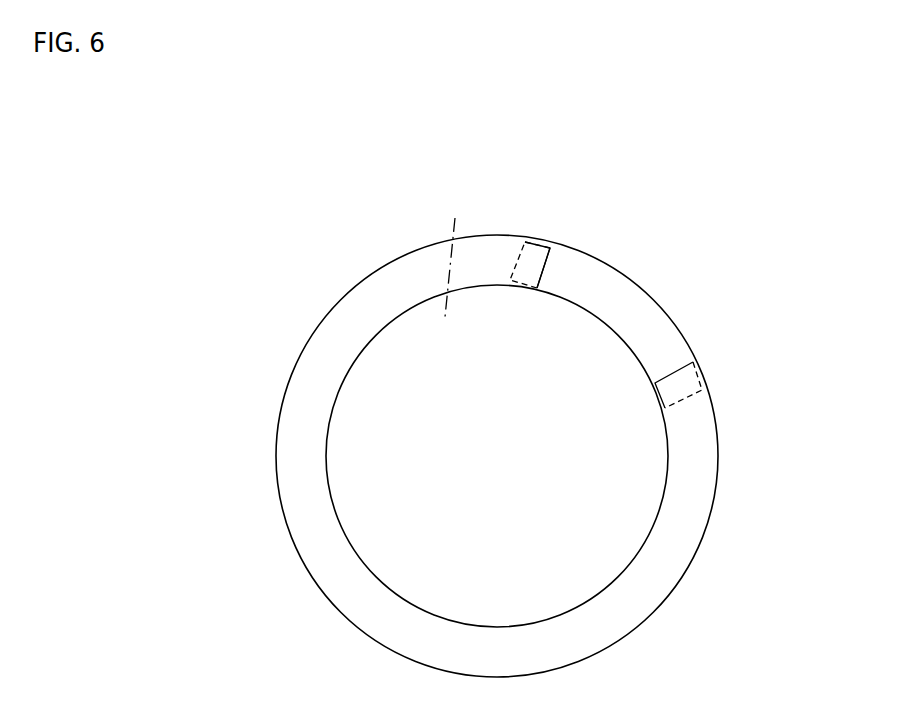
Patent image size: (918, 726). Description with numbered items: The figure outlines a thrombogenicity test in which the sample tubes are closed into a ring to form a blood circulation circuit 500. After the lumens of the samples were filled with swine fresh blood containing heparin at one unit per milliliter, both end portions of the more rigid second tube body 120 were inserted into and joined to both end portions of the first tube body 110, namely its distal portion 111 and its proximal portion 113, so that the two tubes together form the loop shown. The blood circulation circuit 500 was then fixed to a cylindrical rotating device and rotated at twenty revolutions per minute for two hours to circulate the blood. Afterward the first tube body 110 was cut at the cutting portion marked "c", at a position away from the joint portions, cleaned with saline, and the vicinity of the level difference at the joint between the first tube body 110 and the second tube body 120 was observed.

The blood circulation circuit 500 is at (185, 127).
The first tube body 110 is at (340, 317).
The second tube body 120 is at (635, 312).
The distal portion 111 is at (535, 230).
The proximal portion 113 is at (717, 379).